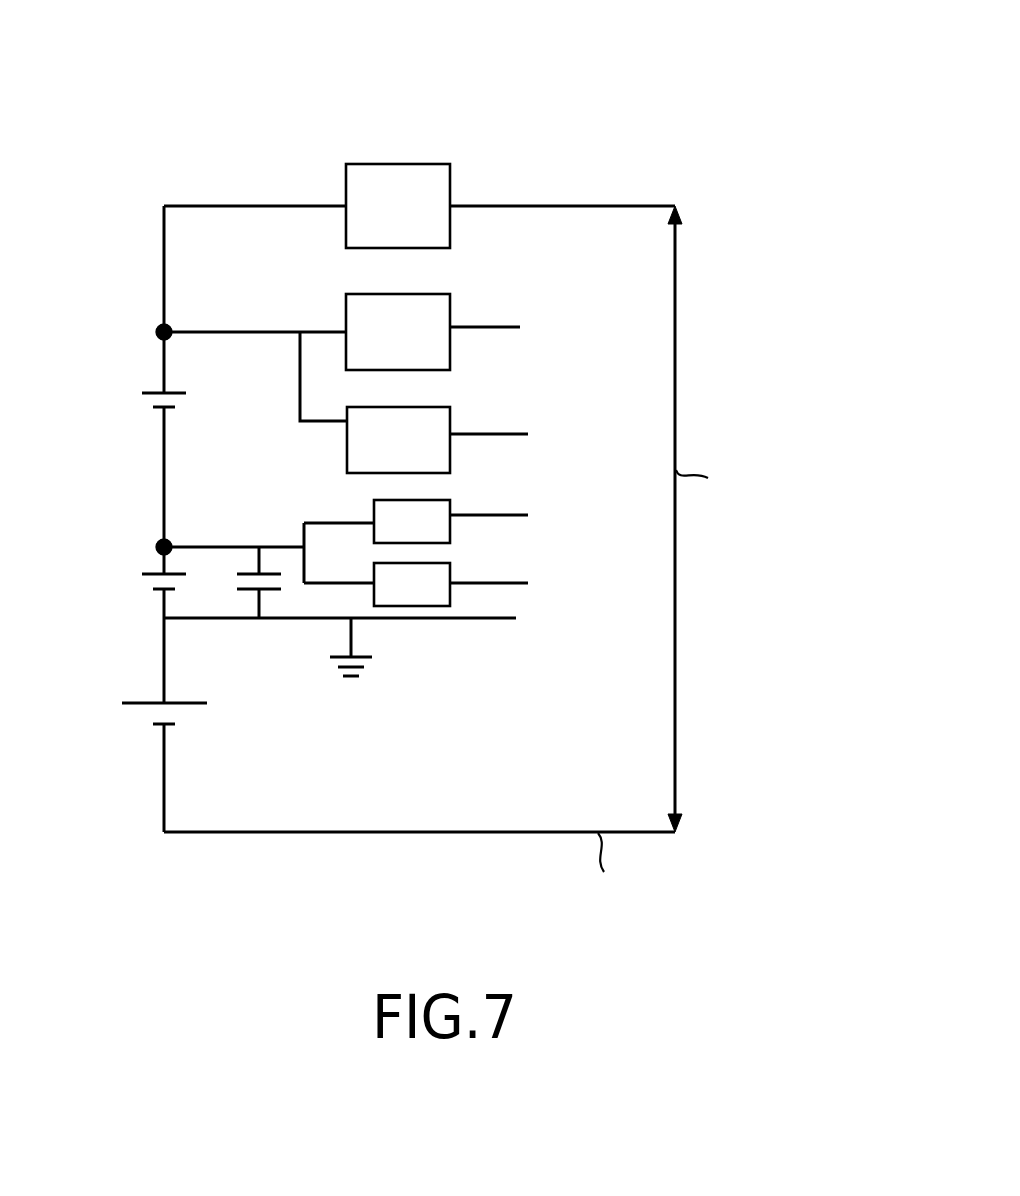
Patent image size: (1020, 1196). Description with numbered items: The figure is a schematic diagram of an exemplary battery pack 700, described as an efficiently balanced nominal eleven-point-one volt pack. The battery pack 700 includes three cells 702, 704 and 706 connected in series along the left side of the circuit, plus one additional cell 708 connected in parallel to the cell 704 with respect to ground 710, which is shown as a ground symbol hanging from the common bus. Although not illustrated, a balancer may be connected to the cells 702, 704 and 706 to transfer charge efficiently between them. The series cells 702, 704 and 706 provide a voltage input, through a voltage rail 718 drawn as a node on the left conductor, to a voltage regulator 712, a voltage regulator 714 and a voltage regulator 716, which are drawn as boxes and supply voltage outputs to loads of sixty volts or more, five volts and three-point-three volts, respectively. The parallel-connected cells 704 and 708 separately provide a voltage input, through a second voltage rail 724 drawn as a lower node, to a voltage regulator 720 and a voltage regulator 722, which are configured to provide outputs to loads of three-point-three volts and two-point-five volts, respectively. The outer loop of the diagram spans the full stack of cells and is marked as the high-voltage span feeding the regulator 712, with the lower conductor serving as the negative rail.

The battery pack 700 is at (300, 30).
The cell 702 is at (147, 404).
The cell 704 is at (143, 584).
The cell 706 is at (135, 715).
The cell 708 is at (250, 590).
The ground 710 is at (370, 668).
The voltage regulator 712 is at (346, 174).
The voltage regulator 714 is at (346, 313).
The voltage regulator 716 is at (347, 458).
The voltage rail 718 is at (158, 329).
The voltage regulator 720 is at (374, 508).
The voltage regulator 722 is at (450, 573).
The voltage rail 724 is at (156, 546).